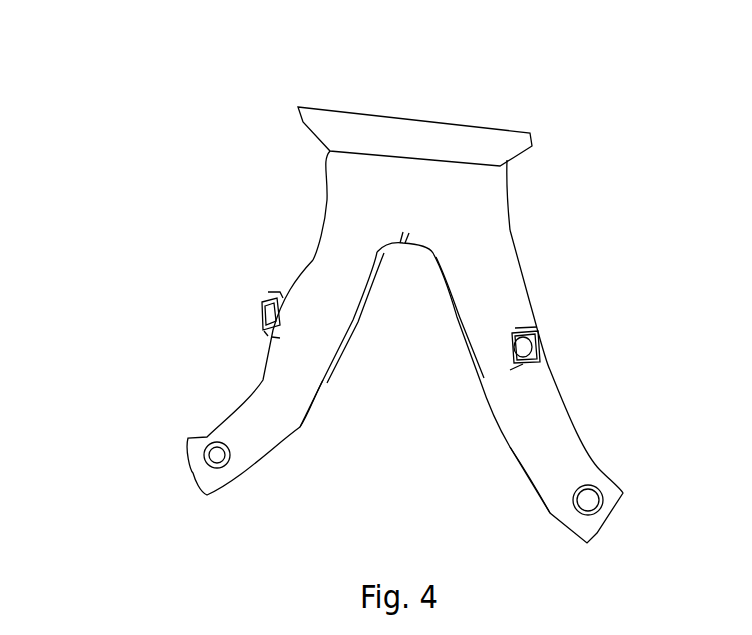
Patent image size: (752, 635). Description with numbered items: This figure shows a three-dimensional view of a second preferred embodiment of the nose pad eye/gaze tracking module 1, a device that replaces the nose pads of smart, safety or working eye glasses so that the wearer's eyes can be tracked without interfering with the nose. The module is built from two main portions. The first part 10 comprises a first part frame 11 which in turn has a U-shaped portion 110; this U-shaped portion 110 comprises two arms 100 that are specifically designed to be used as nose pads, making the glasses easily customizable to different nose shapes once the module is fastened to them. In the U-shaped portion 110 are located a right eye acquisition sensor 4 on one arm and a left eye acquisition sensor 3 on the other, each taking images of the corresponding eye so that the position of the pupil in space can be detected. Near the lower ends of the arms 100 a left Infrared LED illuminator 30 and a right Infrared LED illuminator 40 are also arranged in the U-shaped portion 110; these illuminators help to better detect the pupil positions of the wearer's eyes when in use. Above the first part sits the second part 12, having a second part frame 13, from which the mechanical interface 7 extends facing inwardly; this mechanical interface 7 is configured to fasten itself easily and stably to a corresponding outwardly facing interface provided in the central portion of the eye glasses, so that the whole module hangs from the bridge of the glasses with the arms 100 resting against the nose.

The nose pad eye/gaze tracking module 1 is at (363, 282).
The left eye acquisition sensor 3 is at (530, 348).
The right eye acquisition sensor 4 is at (265, 310).
The mechanical interface 7 is at (381, 150).
The first part 10 is at (209, 349).
The first part frame 11 is at (278, 365).
The second part 12 is at (535, 364).
The second part frame 13 is at (428, 197).
The left Infrared LED illuminator 30 is at (580, 498).
The right Infrared LED illuminator 40 is at (205, 455).
The arms 100 is at (538, 448).
The U-shaped portion 110 is at (307, 282).